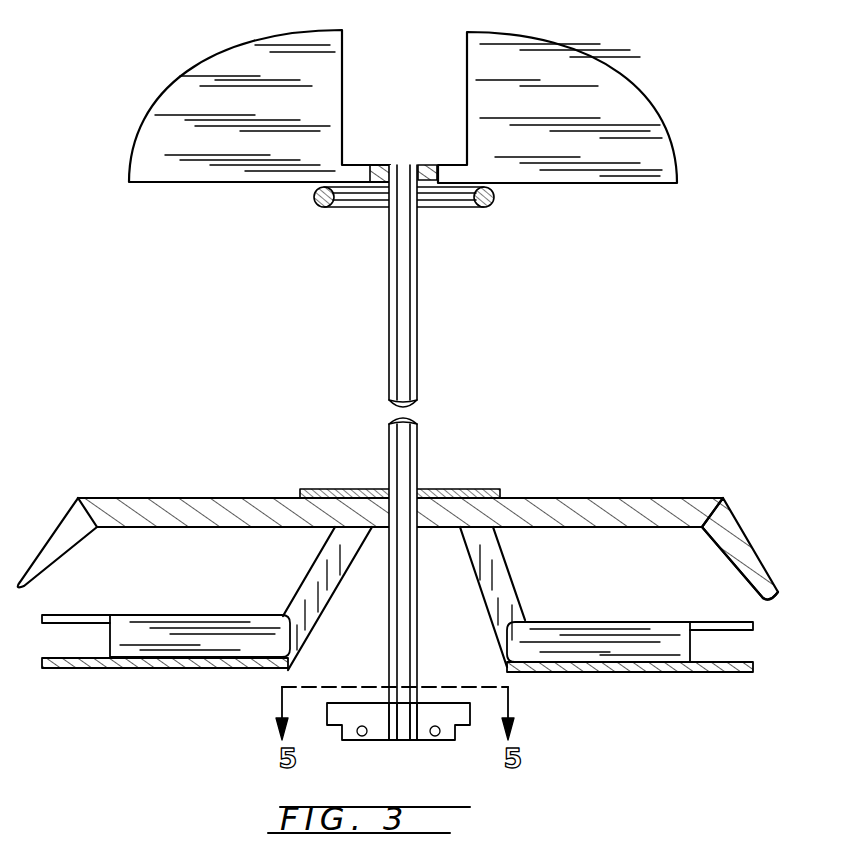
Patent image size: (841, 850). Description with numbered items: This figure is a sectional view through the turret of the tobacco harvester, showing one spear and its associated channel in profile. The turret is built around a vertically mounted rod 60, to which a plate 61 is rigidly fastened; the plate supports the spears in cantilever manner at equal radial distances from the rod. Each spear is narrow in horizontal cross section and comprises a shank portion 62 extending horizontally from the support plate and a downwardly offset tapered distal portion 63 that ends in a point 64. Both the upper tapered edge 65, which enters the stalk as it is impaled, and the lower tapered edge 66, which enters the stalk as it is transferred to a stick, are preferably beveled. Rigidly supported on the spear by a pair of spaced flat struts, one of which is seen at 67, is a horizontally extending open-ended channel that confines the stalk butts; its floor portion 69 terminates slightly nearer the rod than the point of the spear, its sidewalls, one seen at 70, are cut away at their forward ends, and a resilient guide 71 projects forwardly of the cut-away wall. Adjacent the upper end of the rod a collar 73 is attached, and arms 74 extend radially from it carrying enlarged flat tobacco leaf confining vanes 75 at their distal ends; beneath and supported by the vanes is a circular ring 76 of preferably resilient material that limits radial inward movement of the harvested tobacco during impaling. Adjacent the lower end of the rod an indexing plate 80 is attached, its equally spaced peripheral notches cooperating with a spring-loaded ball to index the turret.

The rod 60 is at (407, 348).
The plate 61 is at (480, 490).
The shank portion 62 is at (570, 497).
The tapered distal portion 63 is at (738, 530).
The point 64 is at (772, 597).
The upper tapered edge 65 is at (757, 560).
The lower tapered edge 66 is at (733, 555).
The strut 67 is at (490, 590).
The floor portion 69 is at (640, 672).
The sidewall 70 is at (598, 622).
The resilient guide 71 is at (717, 622).
The collar 73 is at (378, 163).
The arm 74 is at (452, 172).
The tobacco leaf confining vane 75 is at (633, 88).
The circular ring 76 is at (485, 205).
The indexing plate 80 is at (460, 722).